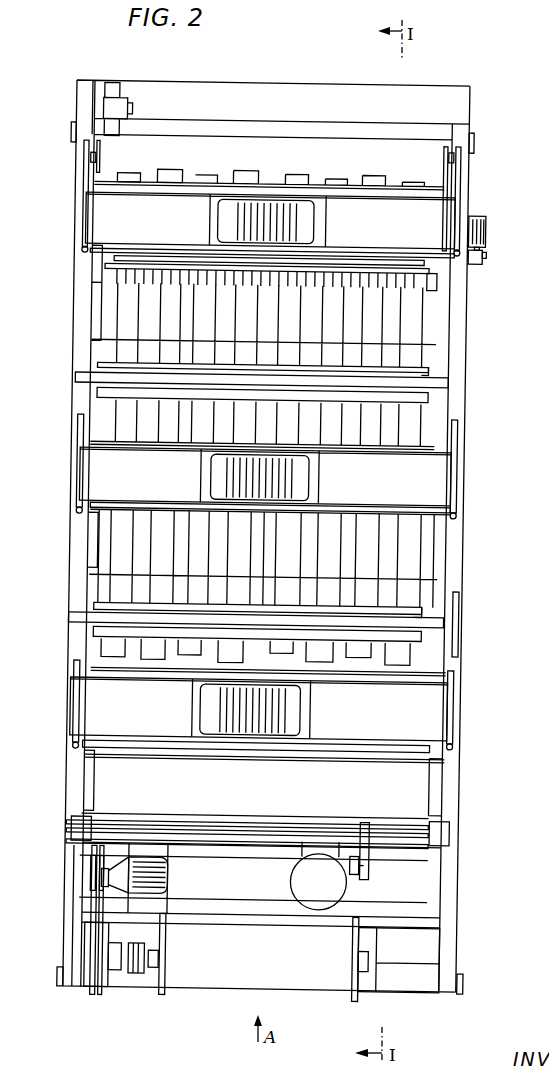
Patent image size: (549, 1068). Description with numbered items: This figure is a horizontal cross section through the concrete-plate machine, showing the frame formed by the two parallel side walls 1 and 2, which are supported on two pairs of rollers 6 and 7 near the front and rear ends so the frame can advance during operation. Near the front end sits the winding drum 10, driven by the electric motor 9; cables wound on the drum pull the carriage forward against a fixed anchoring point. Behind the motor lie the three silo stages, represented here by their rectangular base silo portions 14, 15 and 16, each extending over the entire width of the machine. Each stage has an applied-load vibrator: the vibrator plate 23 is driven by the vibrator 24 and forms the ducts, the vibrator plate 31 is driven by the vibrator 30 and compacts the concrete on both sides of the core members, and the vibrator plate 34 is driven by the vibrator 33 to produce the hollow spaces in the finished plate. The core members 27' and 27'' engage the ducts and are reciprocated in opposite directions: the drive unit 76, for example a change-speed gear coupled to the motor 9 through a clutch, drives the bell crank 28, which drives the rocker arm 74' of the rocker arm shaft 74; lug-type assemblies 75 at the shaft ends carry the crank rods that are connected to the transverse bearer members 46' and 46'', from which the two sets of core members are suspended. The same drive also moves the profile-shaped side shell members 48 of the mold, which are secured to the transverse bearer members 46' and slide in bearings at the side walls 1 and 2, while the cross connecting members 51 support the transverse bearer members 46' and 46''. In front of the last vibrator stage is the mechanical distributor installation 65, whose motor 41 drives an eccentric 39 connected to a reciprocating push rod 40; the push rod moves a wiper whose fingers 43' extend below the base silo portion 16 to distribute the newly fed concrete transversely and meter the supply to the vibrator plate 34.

The side wall 1 is at (85, 97).
The side wall 2 is at (464, 156).
The rollers 6 is at (478, 129).
The rollers 7 is at (72, 132).
The electric motor 9 is at (173, 877).
The winding drum 10 is at (234, 980).
The base silo portion 14 is at (114, 785).
The base silo portion 15 is at (88, 555).
The base silo portion 16 is at (85, 310).
The vibrator plate 23 is at (103, 712).
The vibrator 24 is at (227, 703).
The core members 27' is at (133, 160).
The core members 27'' is at (185, 160).
The bell crank 28 is at (360, 873).
The vibrator 30 is at (231, 466).
The vibrator plate 31 is at (105, 473).
The vibrator 33 is at (314, 224).
The vibrator plate 34 is at (98, 217).
The eccentric 39 is at (480, 256).
The push rod 40 is at (437, 261).
The motor 41 is at (490, 218).
The fingers 43' is at (265, 298).
The transverse bearer member 46' is at (308, 529).
The transverse bearer member 46'' is at (310, 478).
The side shell members 48 is at (97, 170).
The cross connecting members 51 is at (461, 377).
The mechanical distributor installation 65 is at (494, 250).
The rocker arm shaft 74 is at (247, 806).
The rocker arm 74' is at (398, 856).
The lug-type assemblies 75 is at (92, 823).
The drive unit 76 is at (318, 881).